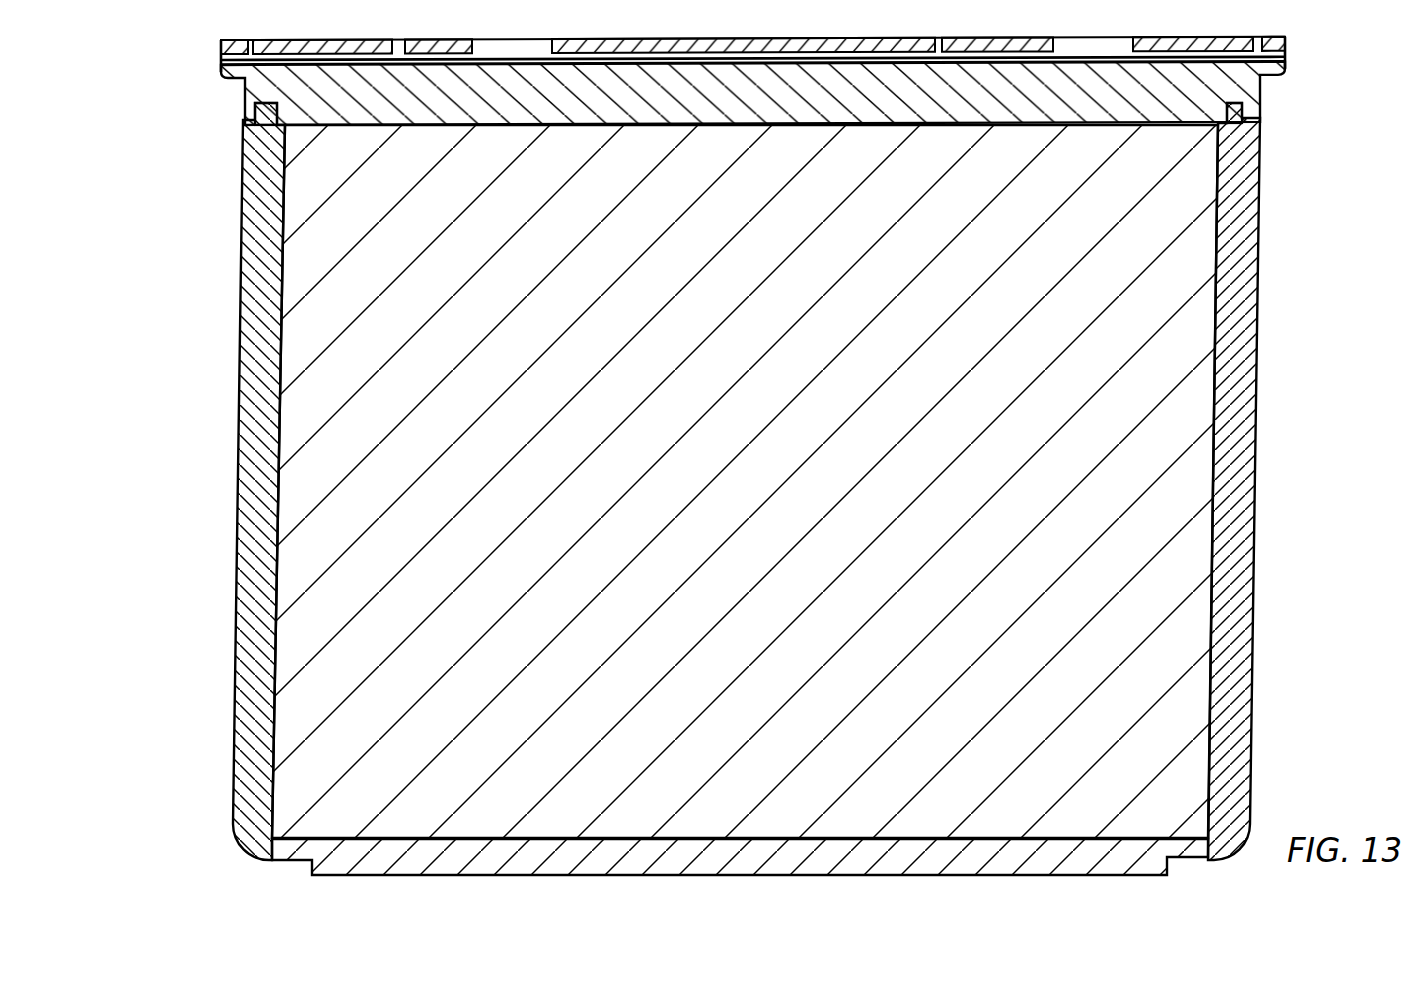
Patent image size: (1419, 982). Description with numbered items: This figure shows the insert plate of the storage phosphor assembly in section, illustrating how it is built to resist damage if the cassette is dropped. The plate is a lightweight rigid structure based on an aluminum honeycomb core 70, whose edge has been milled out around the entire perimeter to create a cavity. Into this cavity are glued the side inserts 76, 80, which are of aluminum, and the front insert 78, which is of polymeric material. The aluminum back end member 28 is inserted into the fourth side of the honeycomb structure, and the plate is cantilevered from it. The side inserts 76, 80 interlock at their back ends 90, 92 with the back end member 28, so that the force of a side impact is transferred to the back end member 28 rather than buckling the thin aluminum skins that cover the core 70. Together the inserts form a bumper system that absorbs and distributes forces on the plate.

The back end member 28 is at (243, 91).
The aluminum honeycomb core 70 is at (743, 510).
The side insert 76 is at (243, 550).
The front insert 78 is at (1082, 862).
The side insert 80 is at (1238, 758).
The back end of insert 90 is at (265, 117).
The back end of insert 92 is at (1240, 108).